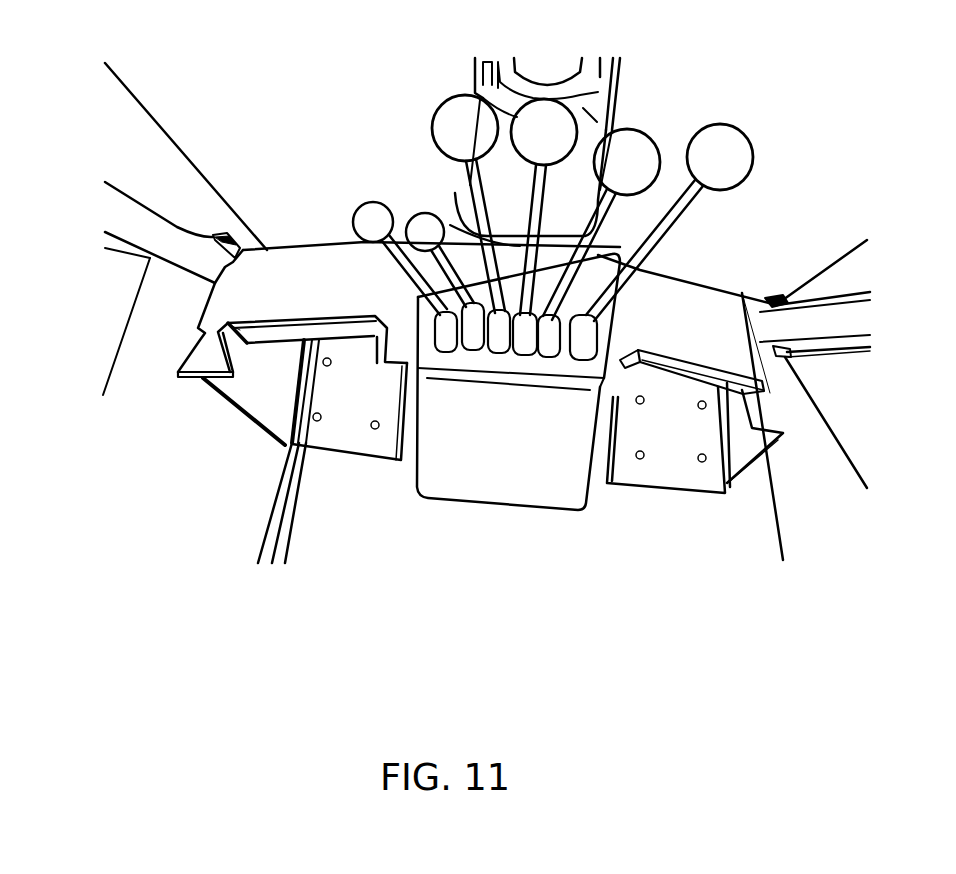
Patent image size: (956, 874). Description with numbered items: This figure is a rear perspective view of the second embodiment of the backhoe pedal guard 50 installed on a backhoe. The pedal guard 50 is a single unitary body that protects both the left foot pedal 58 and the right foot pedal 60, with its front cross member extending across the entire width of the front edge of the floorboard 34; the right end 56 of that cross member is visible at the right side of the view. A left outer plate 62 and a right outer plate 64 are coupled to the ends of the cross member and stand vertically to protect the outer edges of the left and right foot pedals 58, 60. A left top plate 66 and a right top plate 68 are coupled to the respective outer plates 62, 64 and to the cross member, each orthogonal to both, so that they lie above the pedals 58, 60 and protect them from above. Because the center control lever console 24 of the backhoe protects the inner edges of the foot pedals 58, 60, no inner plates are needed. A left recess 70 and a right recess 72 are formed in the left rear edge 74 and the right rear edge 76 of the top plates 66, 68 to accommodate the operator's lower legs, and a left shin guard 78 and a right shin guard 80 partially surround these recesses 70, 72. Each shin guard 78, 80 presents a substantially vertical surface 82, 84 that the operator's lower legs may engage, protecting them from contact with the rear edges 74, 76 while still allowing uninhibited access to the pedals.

The backhoe pedal guard 50 is at (325, 92).
The center control lever console 24 is at (498, 472).
The floorboard 34 is at (673, 532).
The right end 56 is at (776, 302).
The left foot pedal 58 is at (355, 437).
The right foot pedal 60 is at (597, 509).
The left outer plate 62 is at (240, 405).
The right outer plate 64 is at (740, 447).
The left top plate 66 is at (308, 263).
The right top plate 68 is at (707, 308).
The left recess 70 is at (260, 358).
The right recess 72 is at (705, 380).
The left rear edge 74 is at (197, 367).
The right rear edge 76 is at (598, 440).
The left shin guard 78 is at (340, 330).
The right shin guard 80 is at (662, 365).
The vertical surface 82 is at (287, 330).
The vertical surface 84 is at (682, 370).